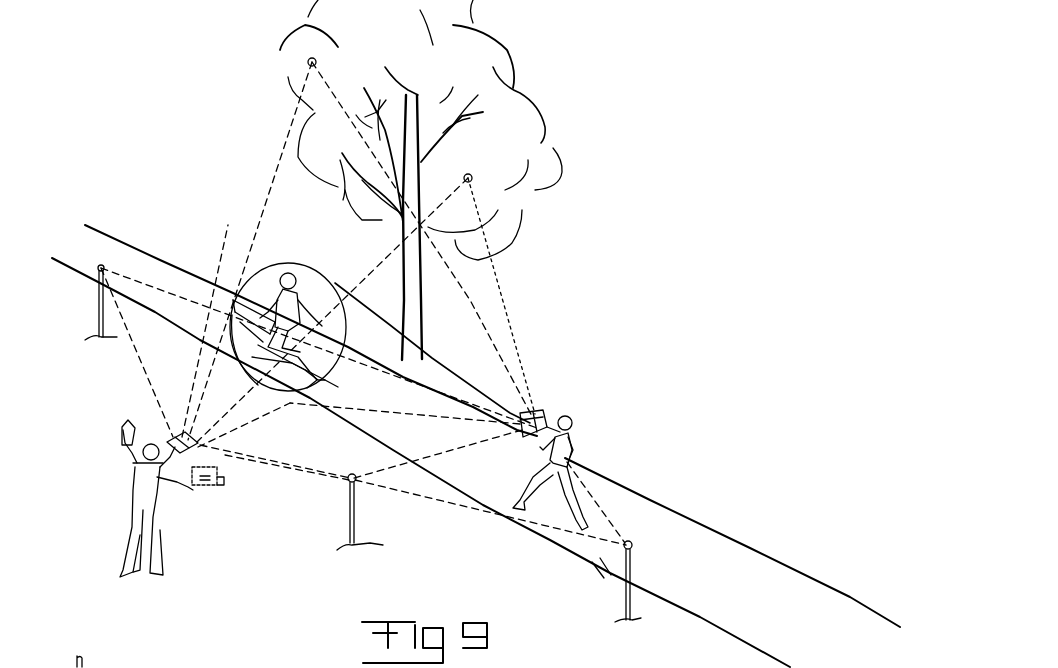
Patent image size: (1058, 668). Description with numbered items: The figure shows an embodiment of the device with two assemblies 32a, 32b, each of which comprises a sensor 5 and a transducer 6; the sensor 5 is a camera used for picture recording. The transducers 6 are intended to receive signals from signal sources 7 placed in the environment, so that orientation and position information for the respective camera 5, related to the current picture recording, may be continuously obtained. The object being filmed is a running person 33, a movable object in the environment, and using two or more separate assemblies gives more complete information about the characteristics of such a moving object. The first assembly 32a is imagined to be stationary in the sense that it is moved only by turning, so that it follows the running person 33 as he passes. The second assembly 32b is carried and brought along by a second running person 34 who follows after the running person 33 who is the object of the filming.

The sensor 5 is at (180, 478).
The transducer 6 is at (168, 437).
The signal source 7 is at (308, 62).
The running person 33 is at (278, 277).
The running person 34 is at (573, 443).
The assembly 32a is at (214, 497).
The assembly 32b is at (558, 400).